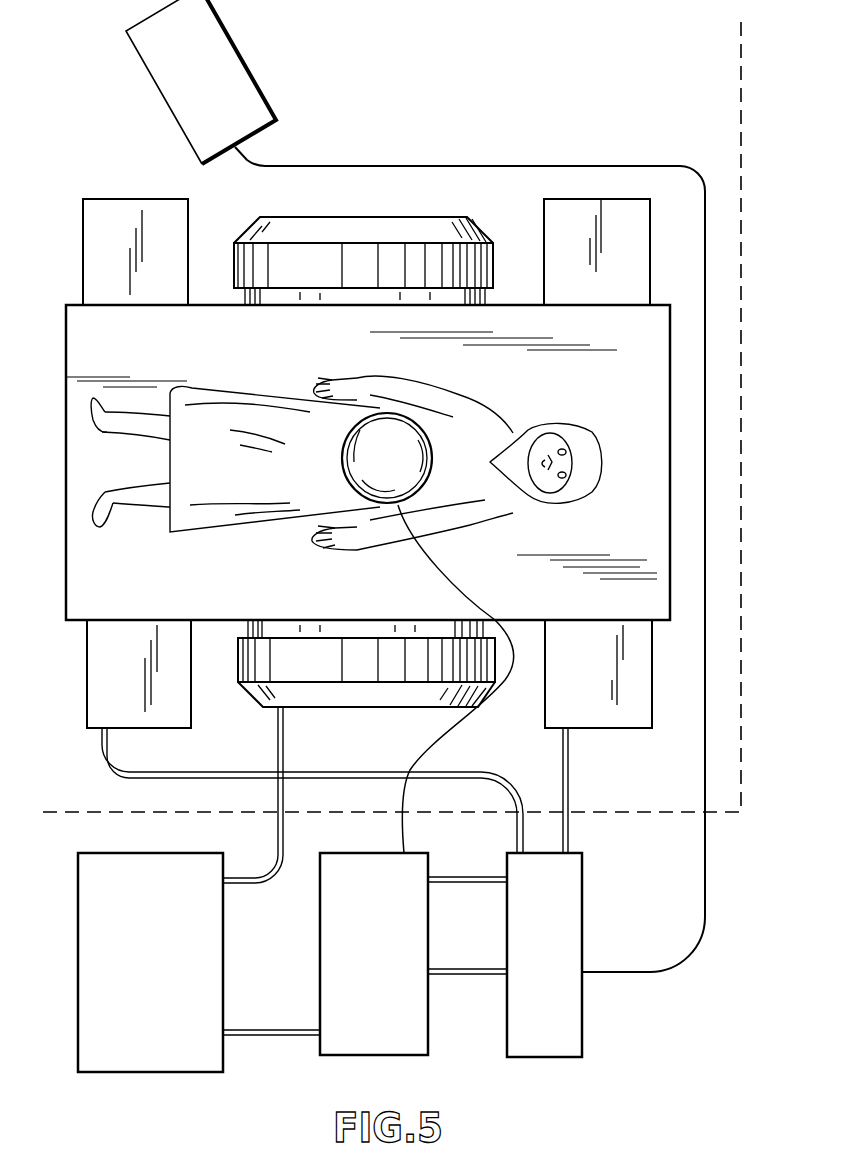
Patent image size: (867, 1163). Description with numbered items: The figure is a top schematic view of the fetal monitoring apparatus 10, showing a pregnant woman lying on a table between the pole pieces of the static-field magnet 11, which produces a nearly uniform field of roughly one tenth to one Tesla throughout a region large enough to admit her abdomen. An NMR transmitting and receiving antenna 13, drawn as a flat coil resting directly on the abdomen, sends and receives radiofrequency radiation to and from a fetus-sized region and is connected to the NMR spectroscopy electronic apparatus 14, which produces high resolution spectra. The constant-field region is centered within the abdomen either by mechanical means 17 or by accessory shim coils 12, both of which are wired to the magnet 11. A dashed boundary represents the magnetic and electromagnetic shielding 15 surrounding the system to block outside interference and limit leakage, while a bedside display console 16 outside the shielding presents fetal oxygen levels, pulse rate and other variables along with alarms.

The apparatus 10 is at (241, 1090).
The magnet 11 is at (360, 250).
The shim coils 12 is at (162, 961).
The NMR transmitting and receiving antenna 13 is at (400, 474).
The NMR spectroscopy electronic apparatus 14 is at (390, 964).
The magnetic and electromagnetic shielding 15 is at (746, 381).
The bedside display console 16 is at (256, 80).
The mechanical means 17 is at (556, 967).